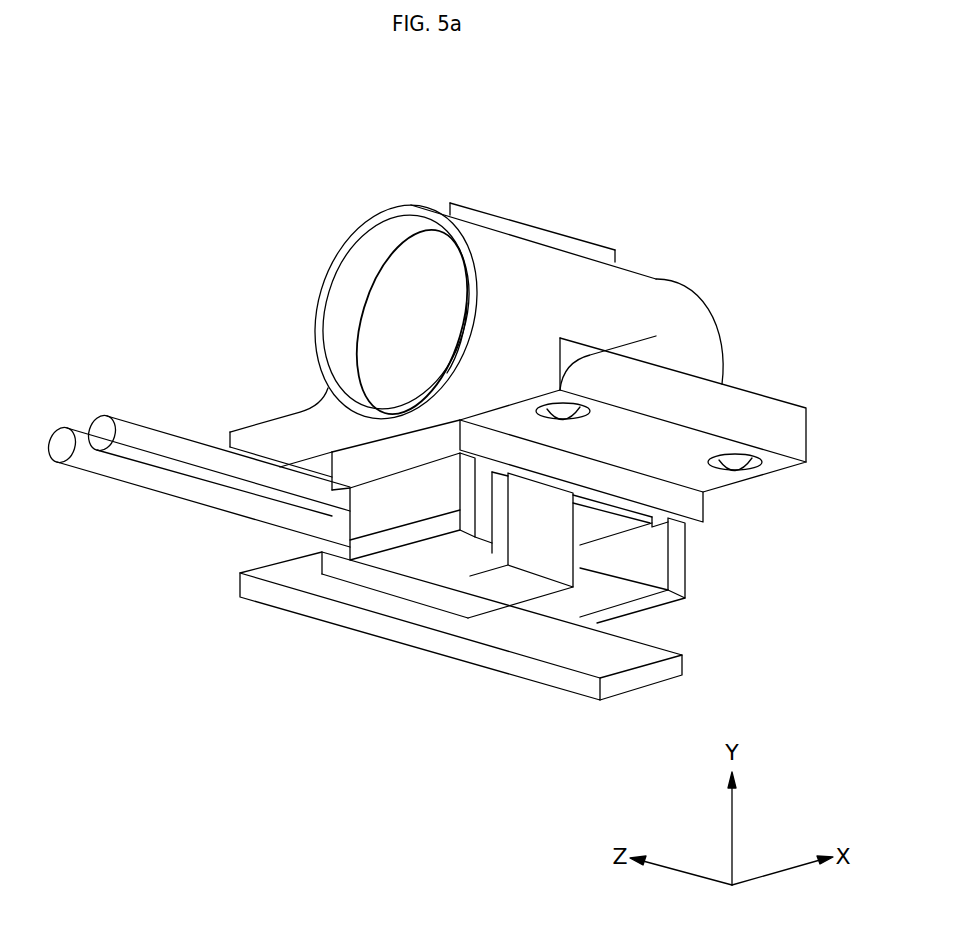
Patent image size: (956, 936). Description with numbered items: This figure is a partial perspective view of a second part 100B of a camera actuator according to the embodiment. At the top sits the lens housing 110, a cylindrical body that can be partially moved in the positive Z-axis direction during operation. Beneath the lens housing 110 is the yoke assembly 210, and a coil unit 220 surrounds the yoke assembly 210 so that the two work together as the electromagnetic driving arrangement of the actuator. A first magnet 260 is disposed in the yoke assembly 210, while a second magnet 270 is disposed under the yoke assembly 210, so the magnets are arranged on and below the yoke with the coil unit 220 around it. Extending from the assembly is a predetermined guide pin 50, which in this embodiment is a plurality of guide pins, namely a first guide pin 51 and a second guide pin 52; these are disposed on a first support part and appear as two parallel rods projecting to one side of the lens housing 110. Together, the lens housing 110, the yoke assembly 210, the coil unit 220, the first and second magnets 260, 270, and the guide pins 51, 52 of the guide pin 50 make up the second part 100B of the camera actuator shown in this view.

The second part 100B is at (121, 93).
The lens housing 110 is at (639, 278).
The guide pin 50 is at (108, 339).
The first guide pin 51 is at (60, 437).
The second guide pin 52 is at (103, 427).
The yoke assembly 210 is at (367, 507).
The coil unit 220 is at (534, 557).
The first magnet 260 is at (607, 530).
The second magnet 270 is at (250, 582).